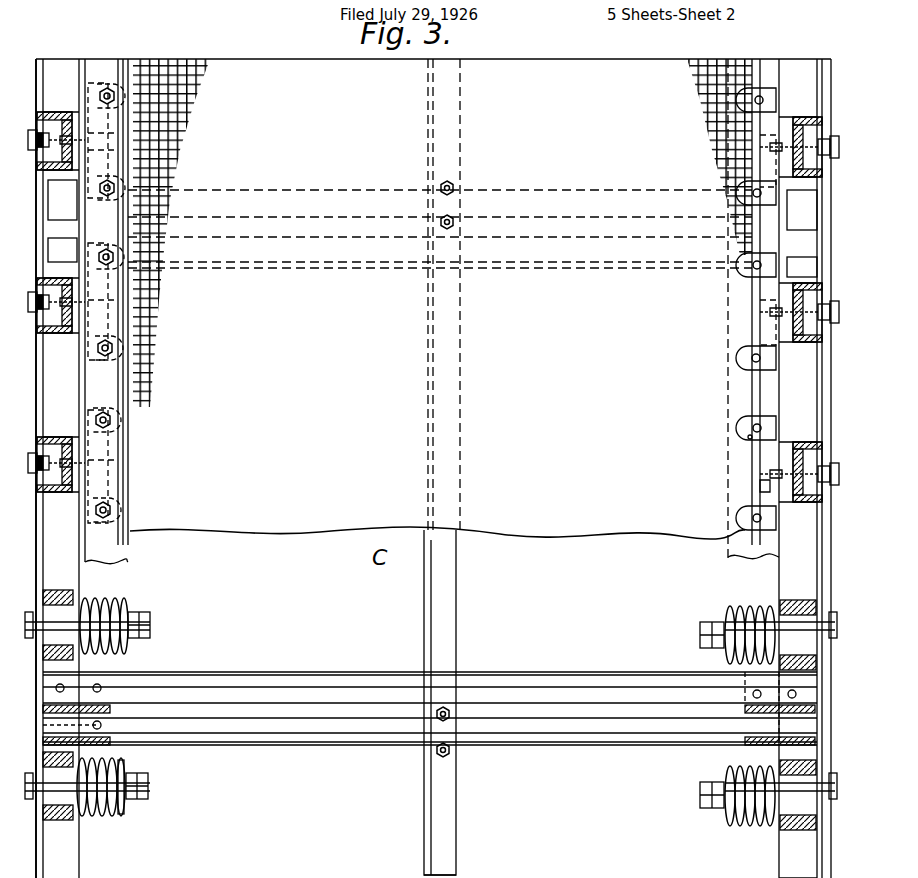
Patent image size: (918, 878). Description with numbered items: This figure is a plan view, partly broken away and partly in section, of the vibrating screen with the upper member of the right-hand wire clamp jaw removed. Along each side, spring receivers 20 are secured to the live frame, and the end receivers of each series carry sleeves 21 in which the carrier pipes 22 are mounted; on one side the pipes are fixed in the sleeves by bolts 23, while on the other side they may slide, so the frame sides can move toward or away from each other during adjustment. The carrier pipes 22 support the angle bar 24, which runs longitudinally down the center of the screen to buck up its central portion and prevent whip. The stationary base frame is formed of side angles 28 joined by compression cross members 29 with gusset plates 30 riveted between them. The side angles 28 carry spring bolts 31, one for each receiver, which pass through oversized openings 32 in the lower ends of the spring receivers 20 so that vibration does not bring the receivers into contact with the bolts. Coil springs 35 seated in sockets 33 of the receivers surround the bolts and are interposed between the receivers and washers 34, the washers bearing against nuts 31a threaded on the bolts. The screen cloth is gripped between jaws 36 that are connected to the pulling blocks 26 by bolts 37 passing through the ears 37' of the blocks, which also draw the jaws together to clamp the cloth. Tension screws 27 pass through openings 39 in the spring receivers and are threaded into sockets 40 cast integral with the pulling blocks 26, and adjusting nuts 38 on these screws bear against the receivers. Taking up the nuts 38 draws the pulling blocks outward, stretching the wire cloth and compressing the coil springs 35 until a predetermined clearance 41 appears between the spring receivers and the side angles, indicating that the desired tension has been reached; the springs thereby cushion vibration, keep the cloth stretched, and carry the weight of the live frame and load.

The spring receivers 20 is at (56, 818).
The sleeves 21 is at (100, 723).
The carrier pipes 22 is at (215, 722).
The bolts 23 is at (112, 692).
The angle bar 24 is at (456, 610).
The pulling blocks 26 is at (760, 448).
The tension screws 27 is at (75, 300).
The side angles 28 is at (37, 562).
The compression cross members 29 is at (310, 690).
The gusset plates 30 is at (95, 665).
The spring bolts 31 is at (68, 612).
The nuts 31a is at (140, 620).
The openings 32 is at (73, 600).
The sockets 33 is at (80, 822).
The washers 34 is at (126, 768).
The coil springs 35 is at (110, 762).
The jaws 36 is at (102, 388).
The bolts 37 is at (404, 338).
The ears 37' is at (717, 433).
The adjusting nuts 38 is at (72, 322).
The openings 39 is at (70, 460).
The sockets 40 is at (768, 488).
The clearance 41 is at (812, 835).